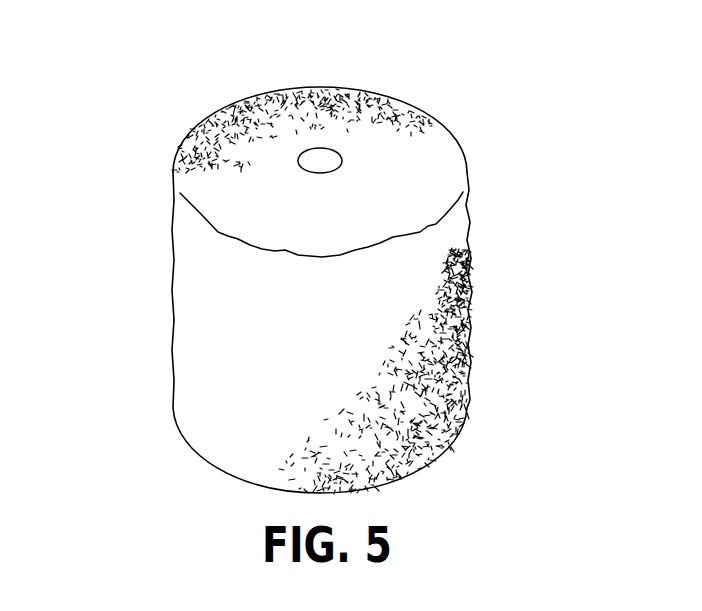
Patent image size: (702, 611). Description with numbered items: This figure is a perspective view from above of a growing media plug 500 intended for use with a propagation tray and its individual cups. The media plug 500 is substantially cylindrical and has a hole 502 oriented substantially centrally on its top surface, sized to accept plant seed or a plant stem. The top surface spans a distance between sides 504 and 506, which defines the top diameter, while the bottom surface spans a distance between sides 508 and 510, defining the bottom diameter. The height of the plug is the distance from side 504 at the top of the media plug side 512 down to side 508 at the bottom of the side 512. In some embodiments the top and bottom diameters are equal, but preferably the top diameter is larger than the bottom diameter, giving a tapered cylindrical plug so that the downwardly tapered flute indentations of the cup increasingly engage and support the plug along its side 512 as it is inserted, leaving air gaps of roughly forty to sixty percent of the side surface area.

The media plug 500 is at (233, 84).
The hole 502 is at (340, 166).
The top surface side 504 is at (466, 163).
The top surface side 506 is at (175, 166).
The bottom surface side 508 is at (466, 420).
The bottom surface side 510 is at (176, 422).
The media plug side 512 is at (471, 303).